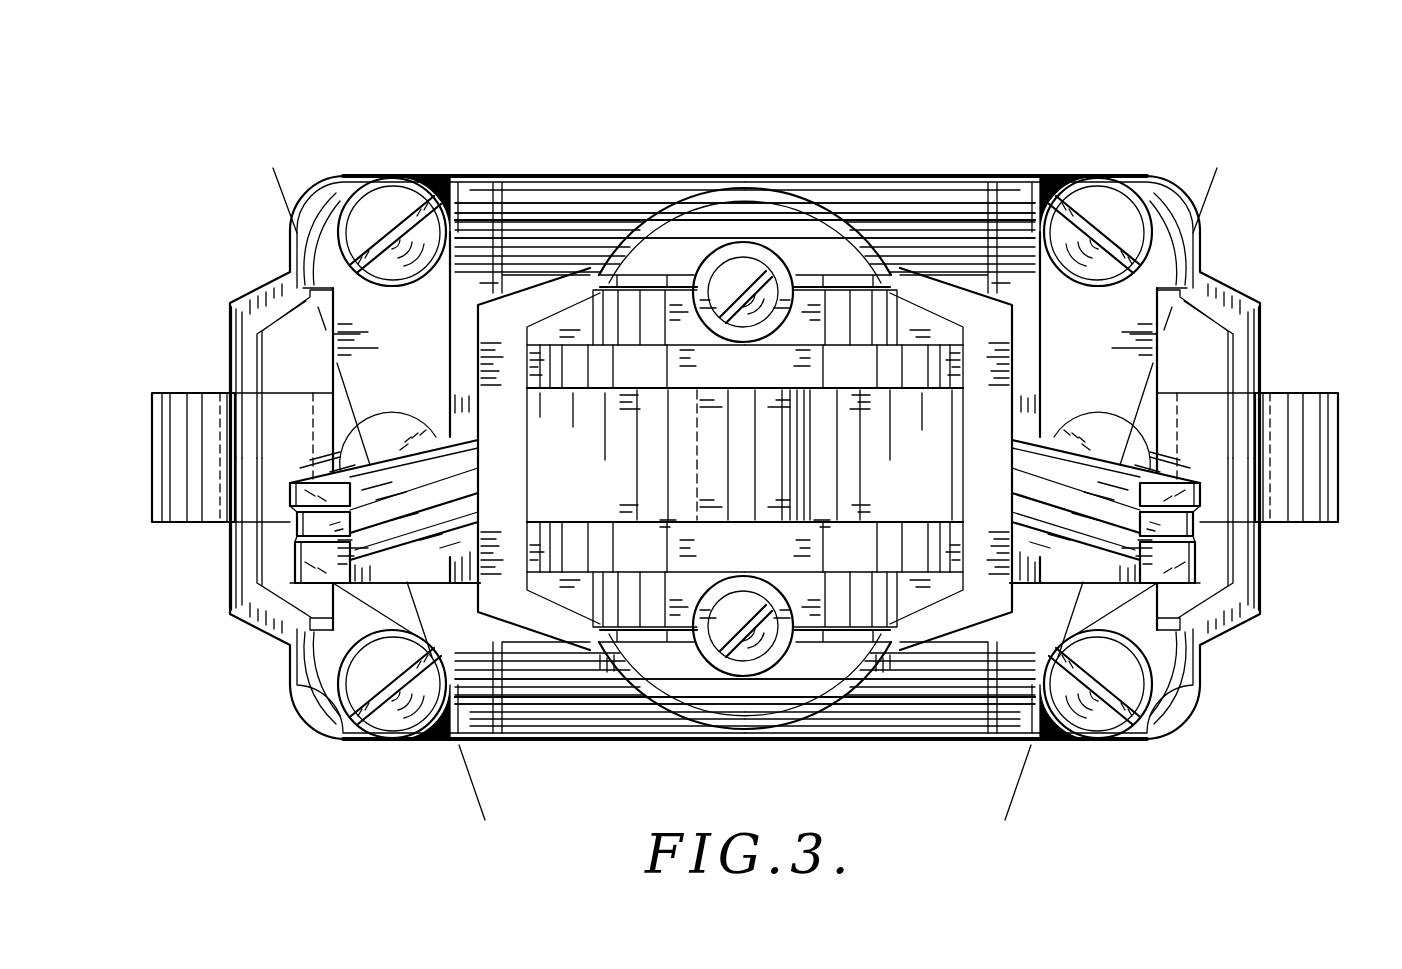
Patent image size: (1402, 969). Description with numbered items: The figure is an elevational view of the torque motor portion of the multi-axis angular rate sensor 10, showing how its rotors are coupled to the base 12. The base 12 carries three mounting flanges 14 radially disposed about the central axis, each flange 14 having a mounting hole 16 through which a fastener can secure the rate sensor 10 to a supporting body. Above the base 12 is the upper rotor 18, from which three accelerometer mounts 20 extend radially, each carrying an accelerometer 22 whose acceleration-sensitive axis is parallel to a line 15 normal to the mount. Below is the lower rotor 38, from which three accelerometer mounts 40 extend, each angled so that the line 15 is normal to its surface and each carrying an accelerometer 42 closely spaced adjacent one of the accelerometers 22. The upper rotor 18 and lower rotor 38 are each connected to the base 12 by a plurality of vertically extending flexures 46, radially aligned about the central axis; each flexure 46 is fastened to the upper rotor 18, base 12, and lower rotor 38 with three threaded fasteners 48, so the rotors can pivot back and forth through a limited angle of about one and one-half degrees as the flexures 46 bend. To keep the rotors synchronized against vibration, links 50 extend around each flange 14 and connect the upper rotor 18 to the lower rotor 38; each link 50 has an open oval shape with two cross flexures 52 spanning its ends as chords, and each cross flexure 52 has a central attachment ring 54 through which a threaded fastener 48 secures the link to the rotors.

The multi-axis angular rate sensor 10 is at (250, 122).
The base 12 is at (916, 494).
The mounting flange 14 is at (193, 393).
The line normal to accelerometer mount 15 is at (287, 201).
The mounting hole 16 is at (215, 451).
The upper rotor 18 is at (912, 178).
The accelerometer mount 20 is at (313, 500).
The accelerometer 22 is at (292, 484).
The lower rotor 38 is at (918, 740).
The accelerometer mount 40 is at (318, 587).
The accelerometer 42 is at (343, 583).
The flexure 46 is at (333, 337).
The threaded fastener 48 is at (407, 198).
The link 50 is at (616, 222).
The cross flexure 52 is at (341, 192).
The central attachment ring 54 is at (777, 267).